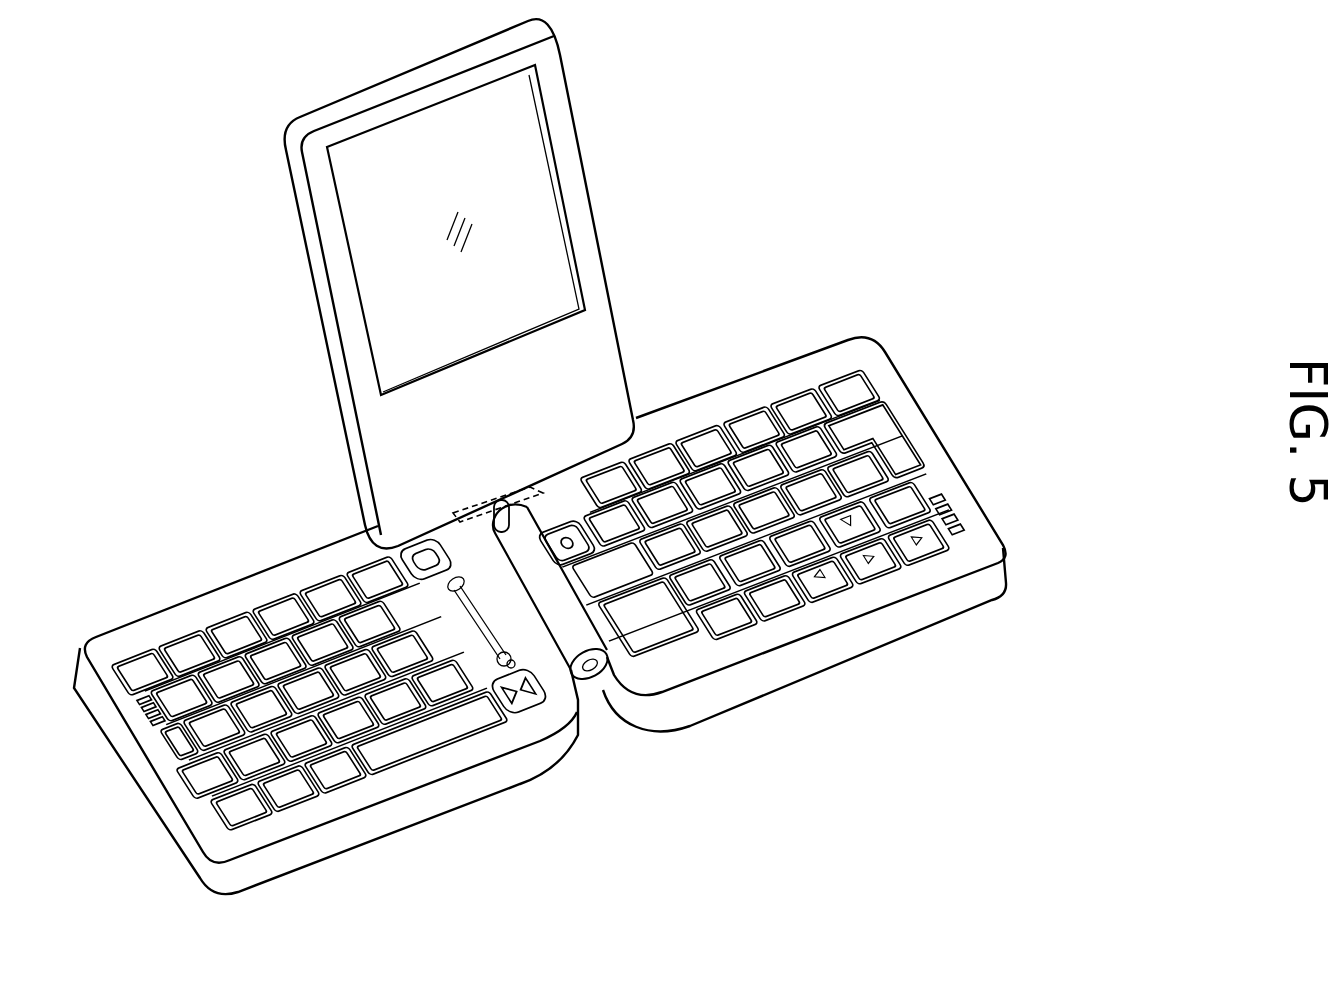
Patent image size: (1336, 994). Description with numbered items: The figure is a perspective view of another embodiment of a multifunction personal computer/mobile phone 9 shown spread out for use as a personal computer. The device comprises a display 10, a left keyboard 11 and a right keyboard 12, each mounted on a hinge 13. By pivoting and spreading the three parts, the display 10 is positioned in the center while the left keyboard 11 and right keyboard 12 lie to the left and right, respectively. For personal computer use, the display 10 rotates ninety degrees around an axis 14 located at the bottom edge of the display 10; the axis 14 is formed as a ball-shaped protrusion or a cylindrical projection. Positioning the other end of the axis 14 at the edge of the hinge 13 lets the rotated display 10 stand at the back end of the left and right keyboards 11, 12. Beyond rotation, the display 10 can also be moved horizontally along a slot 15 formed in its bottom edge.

The multifunction personal computer/mobile phone 9 is at (788, 688).
The display 10 is at (558, 213).
The left keyboard 11 is at (397, 817).
The right keyboard 12 is at (917, 613).
The hinge 13 is at (600, 676).
The axis 14 is at (482, 540).
The slot 15 is at (500, 495).